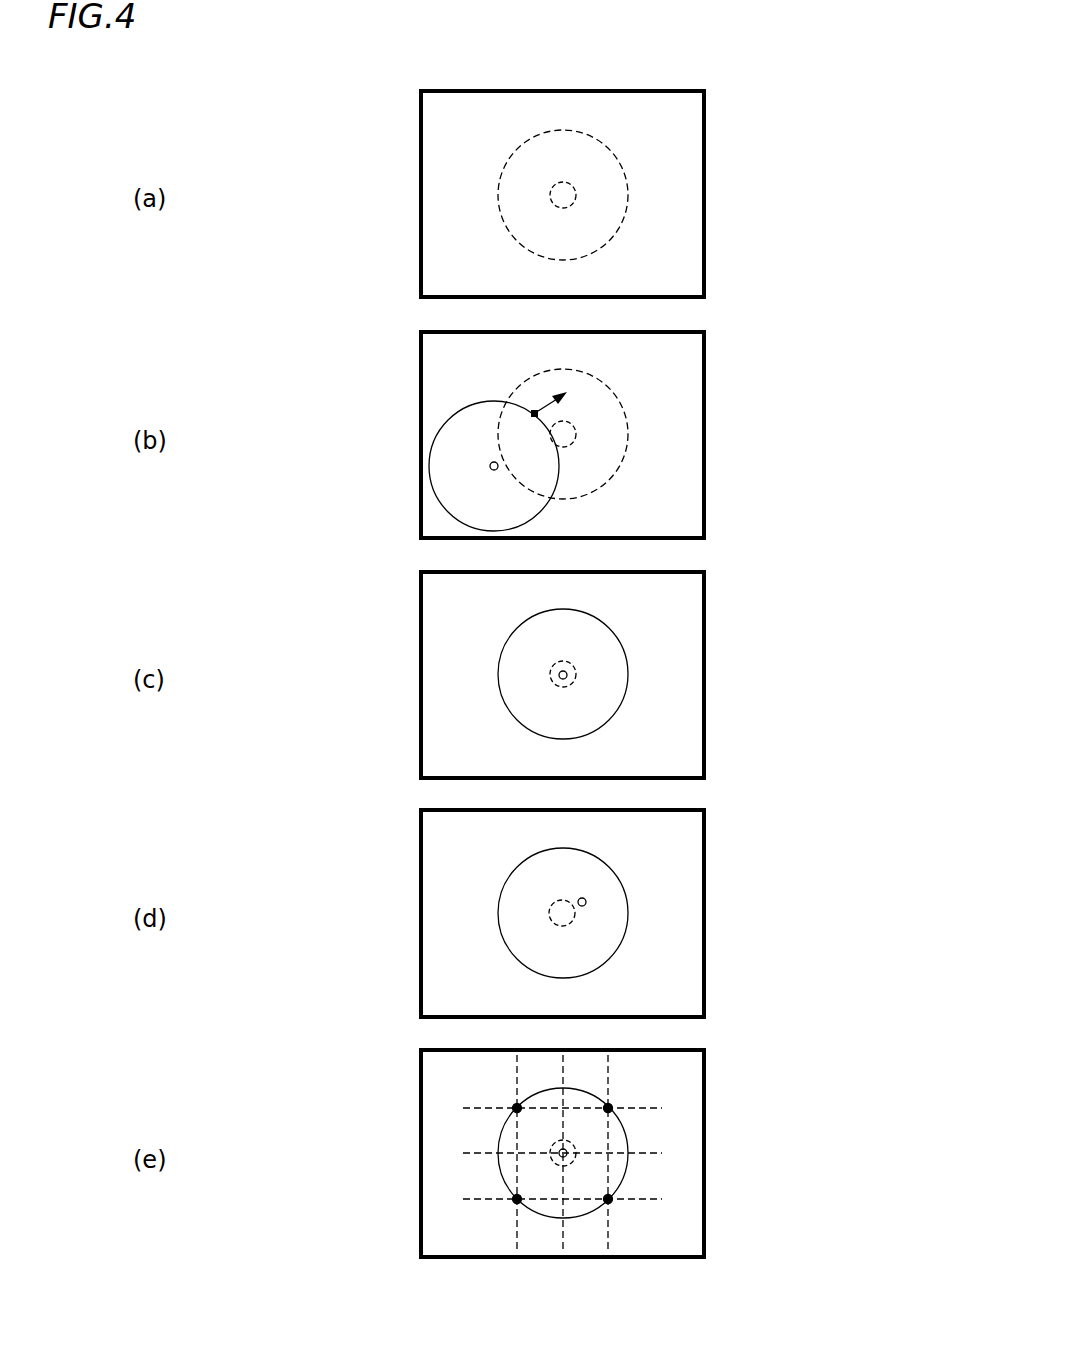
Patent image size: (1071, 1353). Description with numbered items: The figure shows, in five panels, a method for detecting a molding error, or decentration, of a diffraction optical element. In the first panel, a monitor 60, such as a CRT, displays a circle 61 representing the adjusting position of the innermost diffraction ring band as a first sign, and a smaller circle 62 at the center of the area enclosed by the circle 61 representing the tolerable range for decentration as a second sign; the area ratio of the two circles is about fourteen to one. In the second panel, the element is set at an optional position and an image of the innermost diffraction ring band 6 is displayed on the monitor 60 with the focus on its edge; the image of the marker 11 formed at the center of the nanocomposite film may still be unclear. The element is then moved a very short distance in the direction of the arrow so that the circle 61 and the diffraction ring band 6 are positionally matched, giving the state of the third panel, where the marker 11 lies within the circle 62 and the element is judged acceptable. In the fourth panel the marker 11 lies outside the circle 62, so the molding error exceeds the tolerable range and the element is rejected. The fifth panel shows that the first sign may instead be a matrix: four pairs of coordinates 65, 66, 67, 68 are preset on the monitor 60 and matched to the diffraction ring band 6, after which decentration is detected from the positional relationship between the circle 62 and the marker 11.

The diffraction ring band 6 is at (487, 799).
The marker 11 is at (463, 809).
The monitor 60 is at (706, 125).
The circle 61 is at (498, 194).
The circle 62 is at (563, 180).
The pair of coordinates 65 is at (502, 1098).
The pair of coordinates 66 is at (623, 1098).
The pair of coordinates 67 is at (502, 1214).
The pair of coordinates 68 is at (623, 1214).